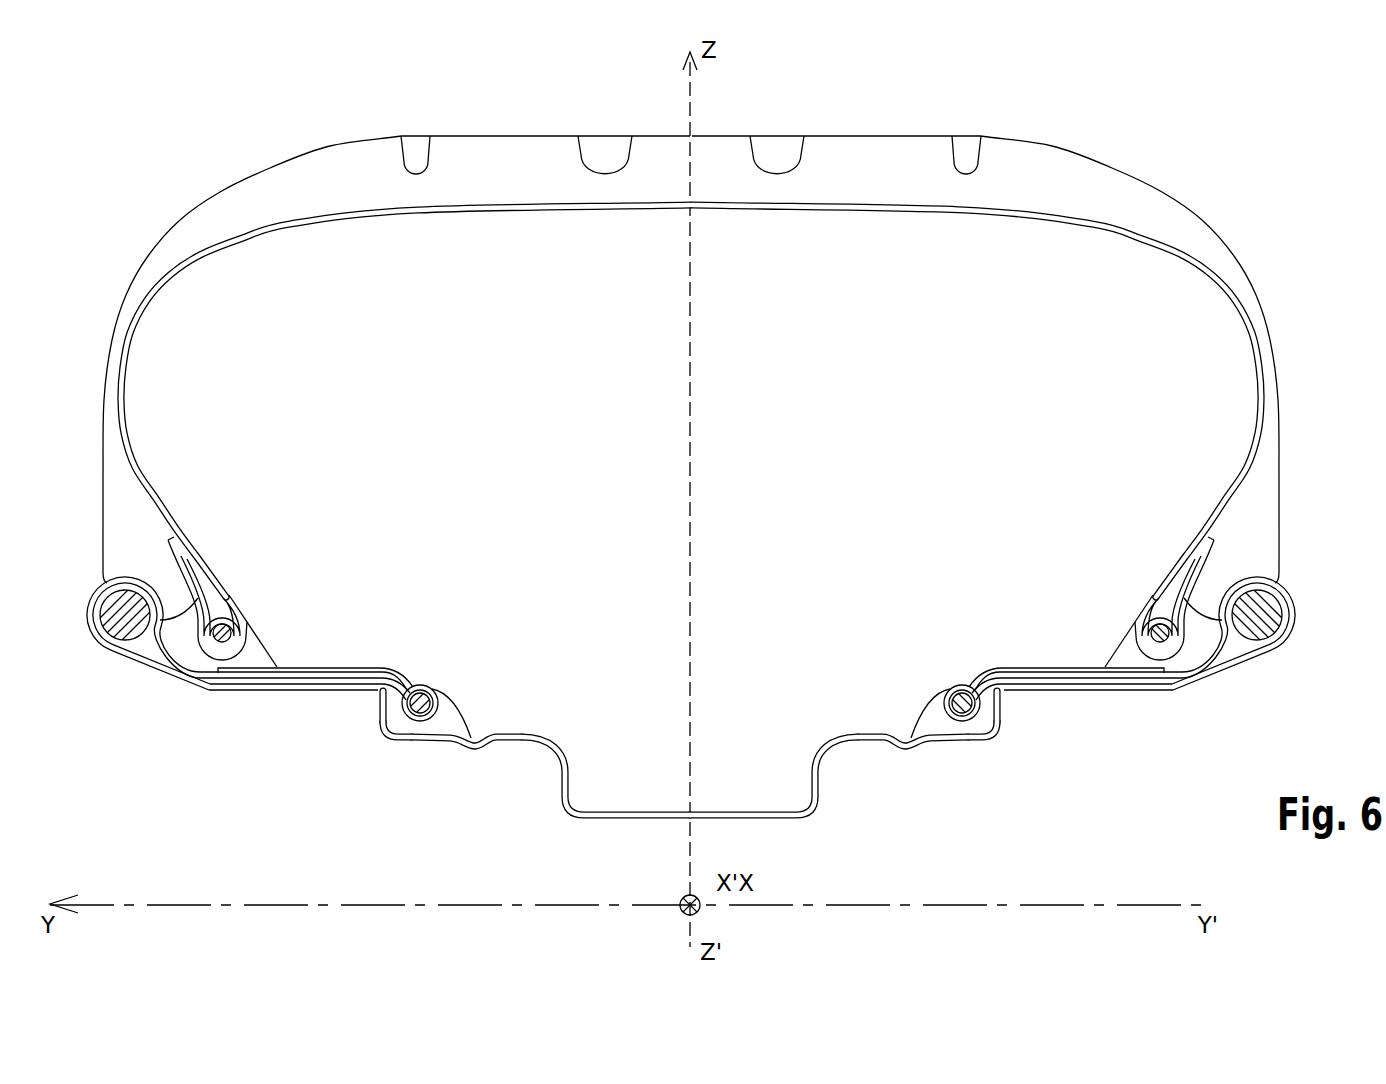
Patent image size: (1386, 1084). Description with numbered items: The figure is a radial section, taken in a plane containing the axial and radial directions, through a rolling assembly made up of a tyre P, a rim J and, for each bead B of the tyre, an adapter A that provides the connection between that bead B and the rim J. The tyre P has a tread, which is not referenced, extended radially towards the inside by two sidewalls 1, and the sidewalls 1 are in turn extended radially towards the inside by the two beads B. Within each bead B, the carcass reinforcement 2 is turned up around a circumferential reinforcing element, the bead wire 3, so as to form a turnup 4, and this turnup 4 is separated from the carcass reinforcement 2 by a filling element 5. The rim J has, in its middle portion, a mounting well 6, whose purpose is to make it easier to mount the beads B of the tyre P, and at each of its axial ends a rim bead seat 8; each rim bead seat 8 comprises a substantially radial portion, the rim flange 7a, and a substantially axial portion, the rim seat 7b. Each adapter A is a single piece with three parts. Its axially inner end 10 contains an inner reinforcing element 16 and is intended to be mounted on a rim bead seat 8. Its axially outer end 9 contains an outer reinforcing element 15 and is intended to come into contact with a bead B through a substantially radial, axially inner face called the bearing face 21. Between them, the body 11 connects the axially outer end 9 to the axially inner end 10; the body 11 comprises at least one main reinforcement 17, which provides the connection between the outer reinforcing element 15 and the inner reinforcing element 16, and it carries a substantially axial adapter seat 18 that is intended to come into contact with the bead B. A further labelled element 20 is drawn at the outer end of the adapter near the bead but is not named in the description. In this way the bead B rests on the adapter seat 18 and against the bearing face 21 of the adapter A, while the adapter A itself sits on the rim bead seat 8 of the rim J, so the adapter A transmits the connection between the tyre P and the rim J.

The sidewall 1 is at (102, 428).
The carcass reinforcement 2 is at (162, 508).
The bead wire 3 is at (226, 621).
The turnup 4 is at (172, 549).
The filling element 5 is at (213, 598).
The mounting well 6 is at (730, 811).
The rim flange 7a is at (378, 716).
The rim seat 7b is at (443, 745).
The rim bead seat 8 is at (400, 742).
The axially outer end 9 is at (92, 647).
The axially inner end 10 is at (470, 728).
The body 11 is at (302, 667).
The outer reinforcing element 15 is at (128, 612).
The inner reinforcing element 16 is at (428, 693).
The main reinforcement 17 is at (257, 685).
The adapter seat 18 is at (220, 689).
The bead base outer layer 20 is at (187, 692).
The bearing face 21 is at (197, 583).
The tyre P is at (314, 116).
The rim J is at (682, 770).
The adapter A is at (691, 719).
The bead B is at (626, 587).